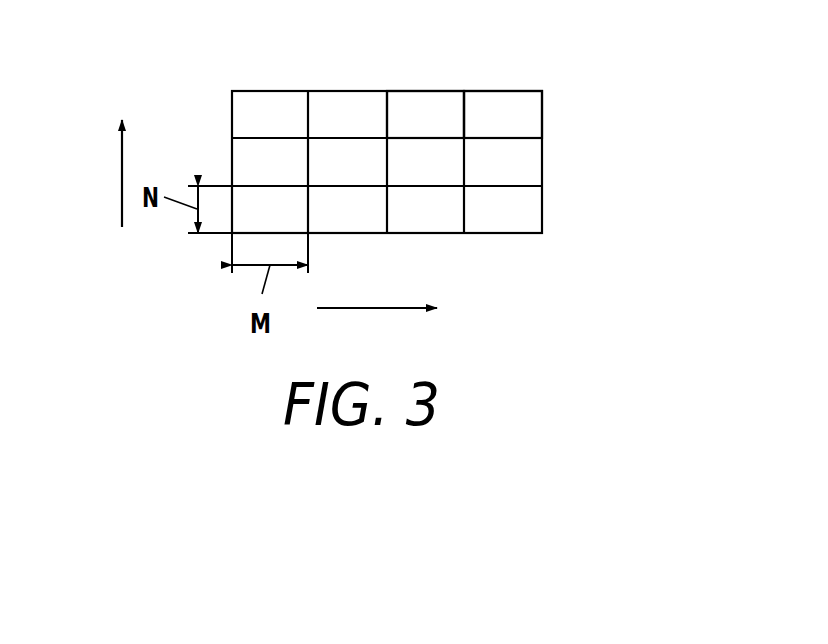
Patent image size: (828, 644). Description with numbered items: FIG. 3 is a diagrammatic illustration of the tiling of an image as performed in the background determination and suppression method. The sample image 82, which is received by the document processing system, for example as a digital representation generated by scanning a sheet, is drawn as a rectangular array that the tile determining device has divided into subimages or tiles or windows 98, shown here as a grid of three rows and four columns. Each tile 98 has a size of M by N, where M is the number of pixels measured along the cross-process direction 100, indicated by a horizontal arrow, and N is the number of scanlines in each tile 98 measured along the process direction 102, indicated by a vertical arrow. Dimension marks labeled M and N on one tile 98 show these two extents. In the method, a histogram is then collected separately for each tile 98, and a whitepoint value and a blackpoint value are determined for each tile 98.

The sample image 82 is at (275, 62).
The tiles 98 is at (480, 98).
The cross-process direction 100 is at (407, 312).
The process direction 102 is at (120, 172).